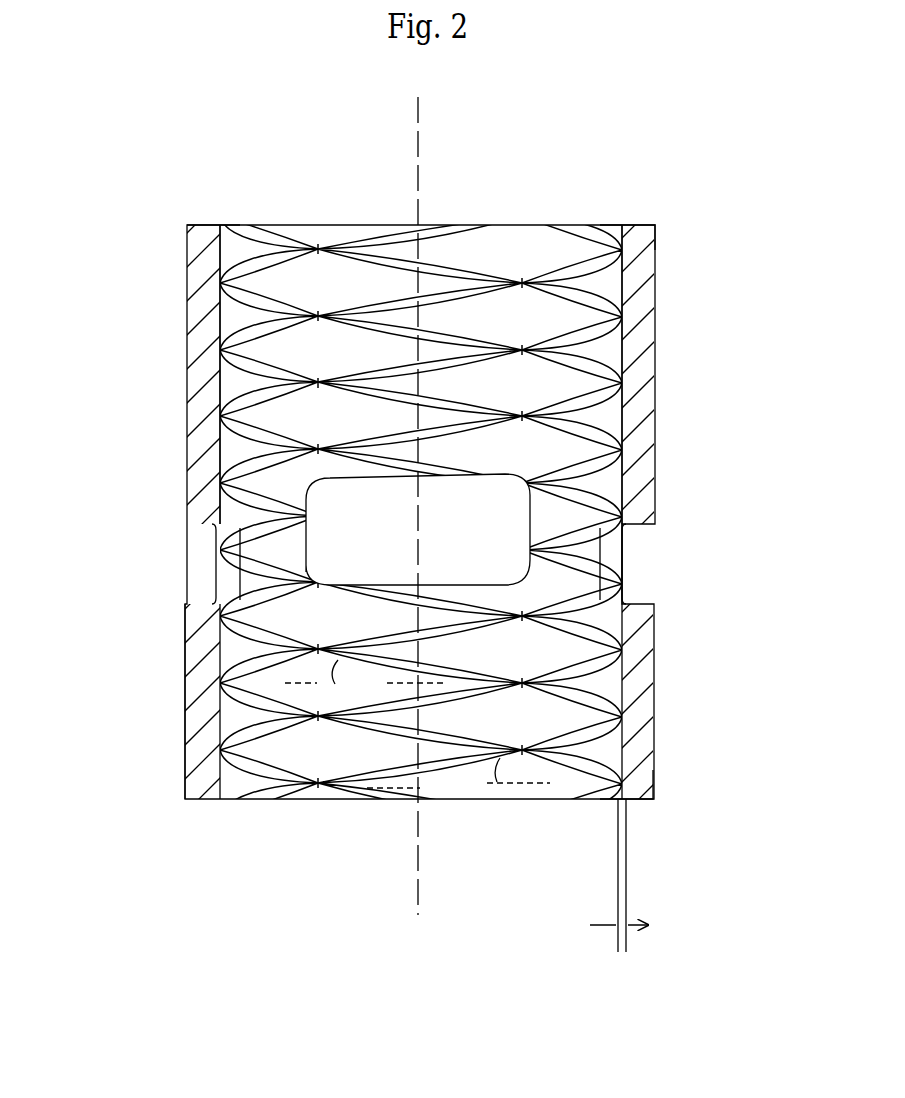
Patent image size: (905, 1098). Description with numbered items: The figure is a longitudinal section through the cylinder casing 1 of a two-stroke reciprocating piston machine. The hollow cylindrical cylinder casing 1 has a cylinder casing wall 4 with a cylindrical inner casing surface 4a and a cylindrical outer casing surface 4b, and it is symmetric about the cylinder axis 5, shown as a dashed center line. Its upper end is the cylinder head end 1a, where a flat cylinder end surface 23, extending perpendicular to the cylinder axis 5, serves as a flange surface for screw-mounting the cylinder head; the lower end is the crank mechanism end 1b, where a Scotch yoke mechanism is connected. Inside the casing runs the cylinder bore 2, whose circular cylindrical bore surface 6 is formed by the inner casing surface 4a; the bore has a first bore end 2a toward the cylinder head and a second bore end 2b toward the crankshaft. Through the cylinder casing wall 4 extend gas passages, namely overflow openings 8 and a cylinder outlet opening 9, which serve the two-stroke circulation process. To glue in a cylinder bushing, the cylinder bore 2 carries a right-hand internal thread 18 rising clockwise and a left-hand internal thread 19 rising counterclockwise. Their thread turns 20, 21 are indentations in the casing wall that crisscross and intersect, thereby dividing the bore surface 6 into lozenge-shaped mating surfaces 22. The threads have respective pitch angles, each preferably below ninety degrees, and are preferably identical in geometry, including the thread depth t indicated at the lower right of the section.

The cylinder casing 1 is at (184, 205).
The cylinder head end 1a is at (640, 218).
The crank mechanism end 1b is at (660, 832).
The cylinder bore 2 is at (540, 255).
The first bore end 2a is at (510, 210).
The second bore end 2b is at (515, 810).
The cylinder casing wall 4 is at (643, 345).
The inner casing surface 4a is at (604, 282).
The outer casing surface 4b is at (183, 717).
The cylinder axis 5 is at (420, 912).
The bore surface 6 is at (233, 313).
The overflow opening 8 is at (214, 568).
The cylinder outlet opening 9 is at (480, 493).
The right-hand internal thread 18 is at (375, 727).
The left-hand internal thread 19 is at (650, 755).
The thread turns 20 is at (570, 675).
The thread turns 21 is at (560, 627).
The mating surfaces 22 is at (535, 447).
The cylinder end surface 23 is at (209, 224).
The depth t is at (619, 875).